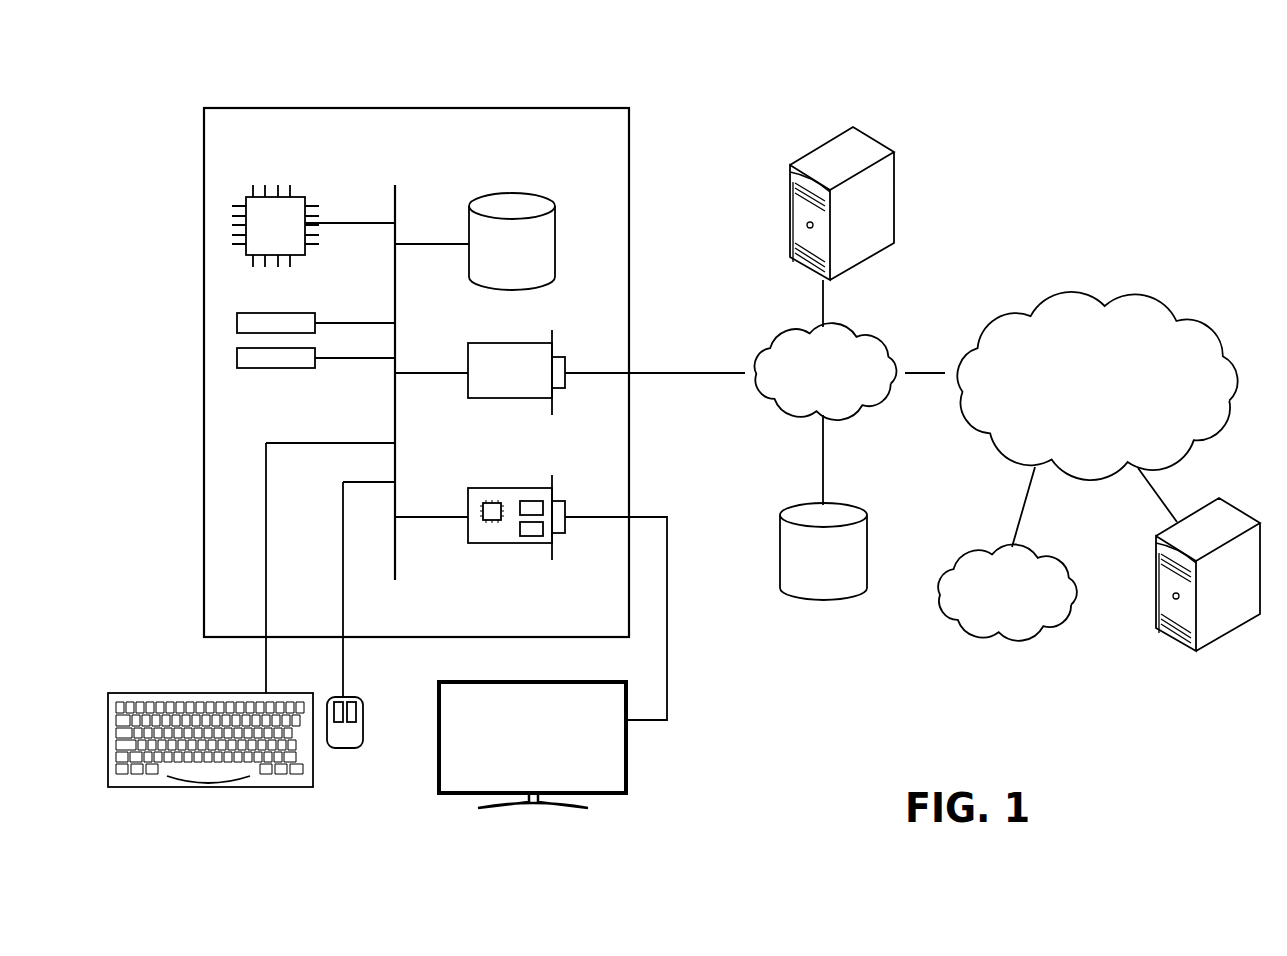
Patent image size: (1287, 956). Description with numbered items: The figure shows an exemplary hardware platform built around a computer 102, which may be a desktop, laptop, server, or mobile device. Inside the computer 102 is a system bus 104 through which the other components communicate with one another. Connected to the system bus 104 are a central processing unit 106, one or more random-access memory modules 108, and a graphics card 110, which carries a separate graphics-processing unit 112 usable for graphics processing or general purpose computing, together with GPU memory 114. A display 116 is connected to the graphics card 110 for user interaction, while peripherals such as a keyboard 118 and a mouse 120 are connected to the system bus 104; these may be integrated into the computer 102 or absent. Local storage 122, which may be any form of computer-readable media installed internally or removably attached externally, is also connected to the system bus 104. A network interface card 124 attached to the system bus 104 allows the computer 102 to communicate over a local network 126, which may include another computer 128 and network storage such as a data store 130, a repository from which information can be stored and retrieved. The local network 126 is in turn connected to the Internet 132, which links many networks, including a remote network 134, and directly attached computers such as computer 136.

The computer 102 is at (582, 107).
The system bus 104 is at (396, 190).
The central processing unit 106 is at (305, 197).
The random-access memory modules 108 is at (315, 358).
The graphics card 110 is at (547, 582).
The graphics-processing unit 112 is at (490, 523).
The GPU memory 114 is at (529, 536).
The display 116 is at (628, 775).
The keyboard 118 is at (213, 790).
The mouse 120 is at (343, 752).
The local storage 122 is at (556, 222).
The network interface card 124 is at (468, 355).
The local network 126 is at (880, 332).
The computer 128 is at (880, 138).
The data store 130 is at (857, 505).
The Internet 132 is at (1142, 295).
The remote network 134 is at (1065, 552).
The computer 136 is at (1235, 508).